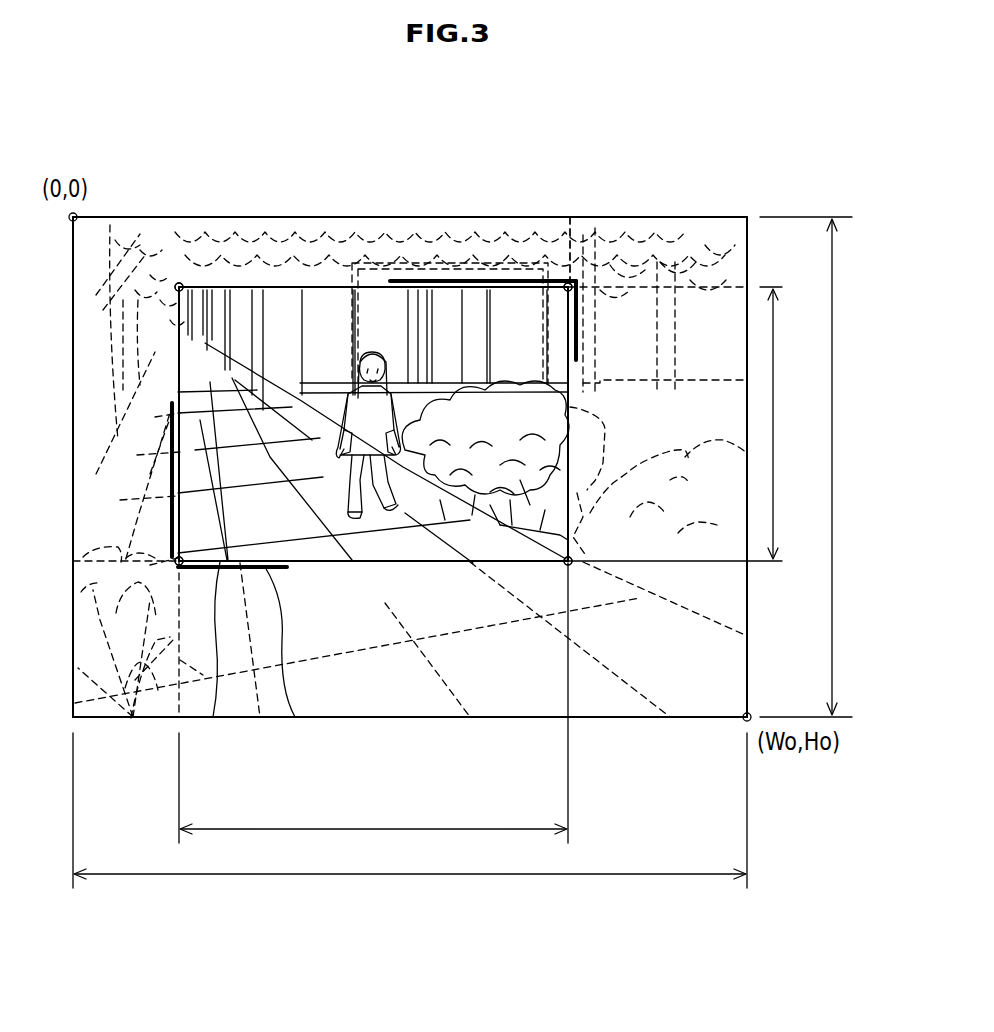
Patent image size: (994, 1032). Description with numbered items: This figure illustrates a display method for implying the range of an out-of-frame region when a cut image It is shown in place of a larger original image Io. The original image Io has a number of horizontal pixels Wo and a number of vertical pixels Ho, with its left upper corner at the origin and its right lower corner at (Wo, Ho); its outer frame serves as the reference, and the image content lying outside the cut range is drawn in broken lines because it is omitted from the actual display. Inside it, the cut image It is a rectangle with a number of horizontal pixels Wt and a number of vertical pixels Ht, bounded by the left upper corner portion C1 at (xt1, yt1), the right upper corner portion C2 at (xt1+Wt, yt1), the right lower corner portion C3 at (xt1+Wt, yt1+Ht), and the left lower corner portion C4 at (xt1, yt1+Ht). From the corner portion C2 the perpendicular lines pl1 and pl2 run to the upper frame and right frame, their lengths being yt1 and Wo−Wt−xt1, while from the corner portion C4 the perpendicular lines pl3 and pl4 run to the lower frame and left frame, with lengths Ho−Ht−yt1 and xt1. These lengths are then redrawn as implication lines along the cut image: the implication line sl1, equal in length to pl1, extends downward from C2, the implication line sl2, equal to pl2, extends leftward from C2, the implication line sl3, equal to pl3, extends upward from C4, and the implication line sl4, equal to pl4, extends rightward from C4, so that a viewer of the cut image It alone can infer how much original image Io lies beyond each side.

The left upper corner portion C1 is at (179, 286).
The right upper corner portion C2 is at (572, 286).
The right lower corner portion C3 is at (568, 562).
The left lower corner portion C4 is at (215, 717).
The cut image It is at (317, 286).
The original image Io is at (405, 216).
The implication line sl1 is at (580, 322).
The implication line sl2 is at (507, 279).
The implication line sl3 is at (170, 477).
The implication line sl4 is at (293, 717).
The perpendicular line pl1 is at (568, 280).
The perpendicular line pl2 is at (727, 287).
The perpendicular line pl3 is at (175, 690).
The perpendicular line pl4 is at (96, 562).
The number of vertical pixels of the cut image Ht is at (686, 424).
The number of vertical pixels of the original image Ho is at (812, 467).
The number of horizontal pixels of the cut image Wt is at (373, 703).
The number of horizontal pixels of the original image Wo is at (410, 810).